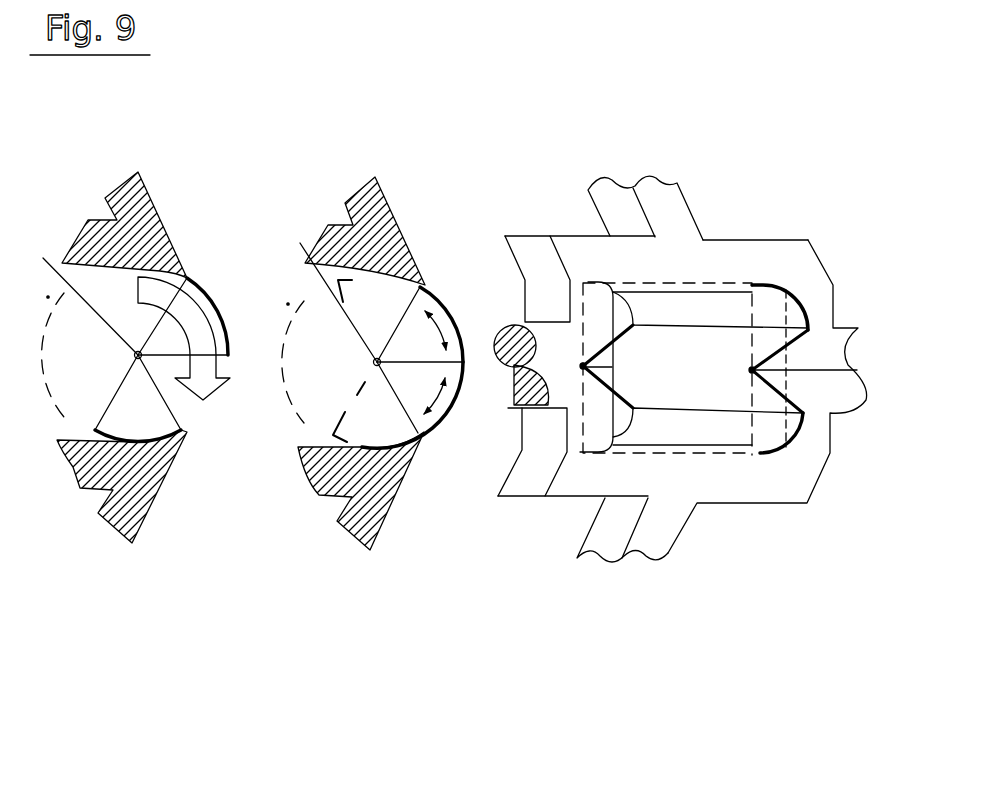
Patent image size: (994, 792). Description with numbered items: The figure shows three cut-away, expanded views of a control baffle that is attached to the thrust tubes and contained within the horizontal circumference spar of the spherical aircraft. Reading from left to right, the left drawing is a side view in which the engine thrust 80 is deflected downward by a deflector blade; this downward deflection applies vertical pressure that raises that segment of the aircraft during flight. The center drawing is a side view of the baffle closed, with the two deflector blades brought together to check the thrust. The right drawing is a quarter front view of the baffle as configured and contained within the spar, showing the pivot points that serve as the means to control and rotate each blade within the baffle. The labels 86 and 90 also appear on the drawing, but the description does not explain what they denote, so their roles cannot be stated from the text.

The engine thrust 80 is at (203, 407).
The bearing surface 86 is at (452, 363).
The pivot position 90 is at (104, 363).